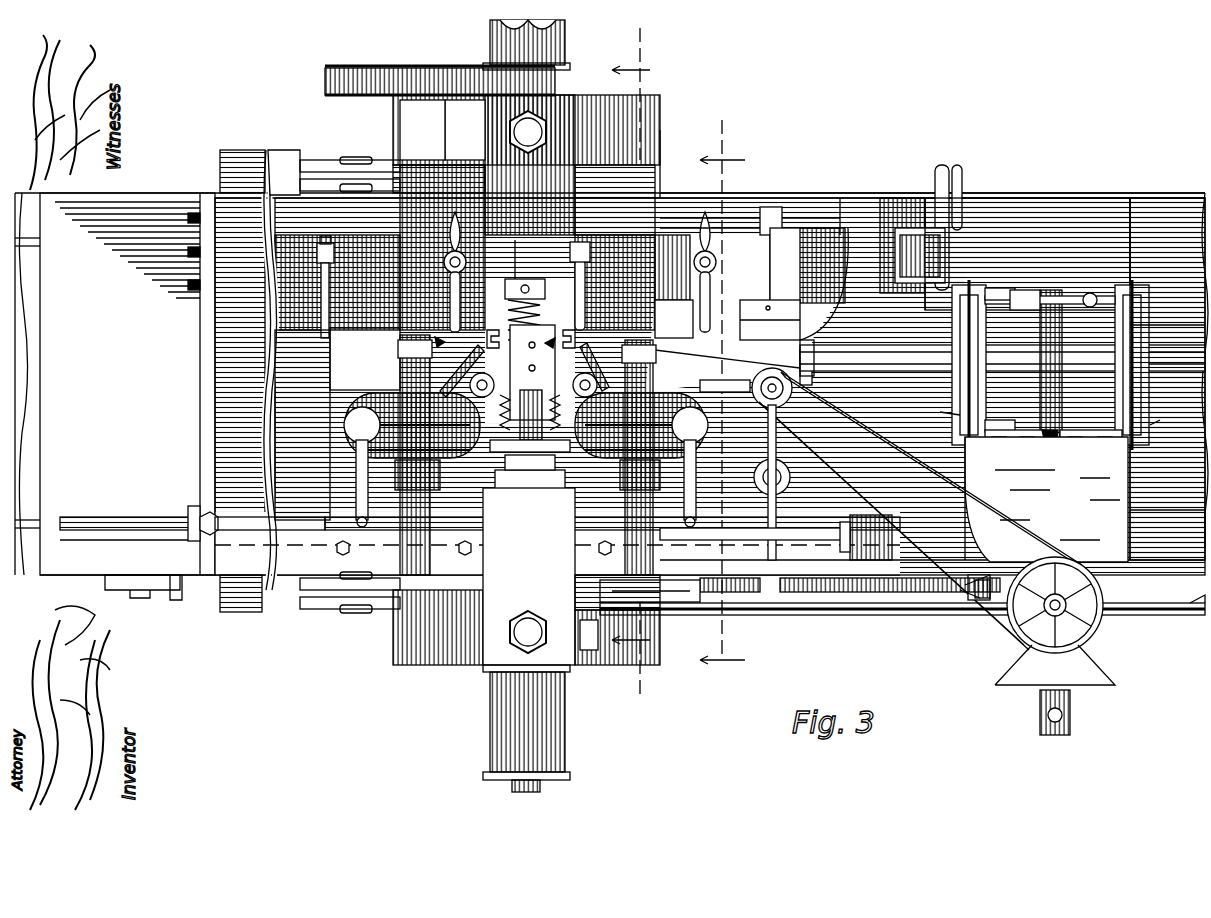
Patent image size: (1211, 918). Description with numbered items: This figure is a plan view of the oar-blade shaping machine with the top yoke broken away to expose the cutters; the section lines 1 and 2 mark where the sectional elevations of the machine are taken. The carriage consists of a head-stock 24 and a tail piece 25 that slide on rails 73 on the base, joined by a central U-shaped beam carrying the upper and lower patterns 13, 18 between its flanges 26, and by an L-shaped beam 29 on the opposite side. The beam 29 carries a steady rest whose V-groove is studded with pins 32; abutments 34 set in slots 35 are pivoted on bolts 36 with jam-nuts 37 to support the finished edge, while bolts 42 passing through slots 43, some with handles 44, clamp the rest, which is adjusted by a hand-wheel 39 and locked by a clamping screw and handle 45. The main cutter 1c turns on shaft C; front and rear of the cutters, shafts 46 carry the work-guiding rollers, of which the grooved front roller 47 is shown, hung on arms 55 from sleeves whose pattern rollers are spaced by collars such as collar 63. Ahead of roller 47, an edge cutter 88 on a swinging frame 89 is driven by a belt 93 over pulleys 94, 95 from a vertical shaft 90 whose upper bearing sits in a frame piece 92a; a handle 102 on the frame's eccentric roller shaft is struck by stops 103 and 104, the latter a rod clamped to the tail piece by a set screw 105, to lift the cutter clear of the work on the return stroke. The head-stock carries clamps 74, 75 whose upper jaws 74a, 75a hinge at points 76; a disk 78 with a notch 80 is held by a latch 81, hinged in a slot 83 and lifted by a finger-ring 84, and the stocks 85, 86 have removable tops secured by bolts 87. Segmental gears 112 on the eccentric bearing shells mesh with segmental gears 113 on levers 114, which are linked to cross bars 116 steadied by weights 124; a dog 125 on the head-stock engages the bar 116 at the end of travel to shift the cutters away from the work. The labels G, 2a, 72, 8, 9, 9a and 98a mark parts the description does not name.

The section line 1— 1 is at (631, 383).
The section line 2— 2 is at (697, 364).
The gear G is at (440, 68).
The tail piece 25 is at (115, 384).
The flanges 26 is at (520, 279).
The shaft C is at (515, 265).
The L-shaped beam 29 is at (765, 195).
The head-stock 24 is at (1027, 254).
The hand-wheel 39 is at (941, 181).
The clamping screw and handle 45 is at (958, 217).
The bolts 36 is at (750, 221).
The handles 44 is at (764, 214).
The jam-nuts 37 is at (783, 226).
The bolts 42 is at (317, 262).
The slots 43 is at (319, 292).
The abutments 34 is at (787, 305).
The slots 35 is at (664, 326).
The pins 32 is at (305, 330).
The spring 2a is at (506, 305).
The main cutter 1c is at (531, 382).
The collar 63 is at (522, 367).
The front guide roller 47 is at (650, 390).
The lever 72 is at (348, 490).
The shafts 46 is at (427, 545).
The plate 8 is at (515, 455).
The plate 9 is at (545, 490).
The plate 9a is at (542, 425).
The rear stop 104 is at (130, 512).
The set screw 105 is at (203, 517).
The pattern 18 is at (557, 531).
The pattern 13 is at (474, 549).
The upper jaw 74a is at (925, 352).
The clamp 74 is at (950, 398).
The hinge points 76 is at (1045, 417).
The disk 78 is at (1058, 400).
The clamp 75 is at (1160, 406).
The upper jaw 75a is at (1167, 323).
The latch 81 is at (1050, 287).
The slot 83 is at (1000, 299).
The finger-ring 84 is at (1100, 289).
The notch 80 is at (1017, 311).
The bolts 87 is at (1000, 414).
The stock 85 is at (1015, 452).
The stock 86 is at (1082, 452).
The belt 93 is at (1035, 522).
The swinging frame 89 is at (954, 529).
The rails 73 is at (1172, 505).
The pulley 95 is at (791, 392).
The edge cutter 88 is at (725, 397).
The pulley 94 is at (1013, 609).
The vertical shaft 90 is at (1102, 618).
The arms 55 is at (755, 470).
The handle 102 is at (755, 524).
The stop 103 is at (812, 543).
The bracket 98a is at (920, 557).
The dog 125 is at (973, 582).
The frame piece 92a is at (737, 610).
The cross bars 116 is at (687, 595).
The segmental gears 112 is at (463, 170).
The segmental gears 113 is at (427, 175).
The weights 124 is at (240, 166).
The levers 114 is at (320, 169).